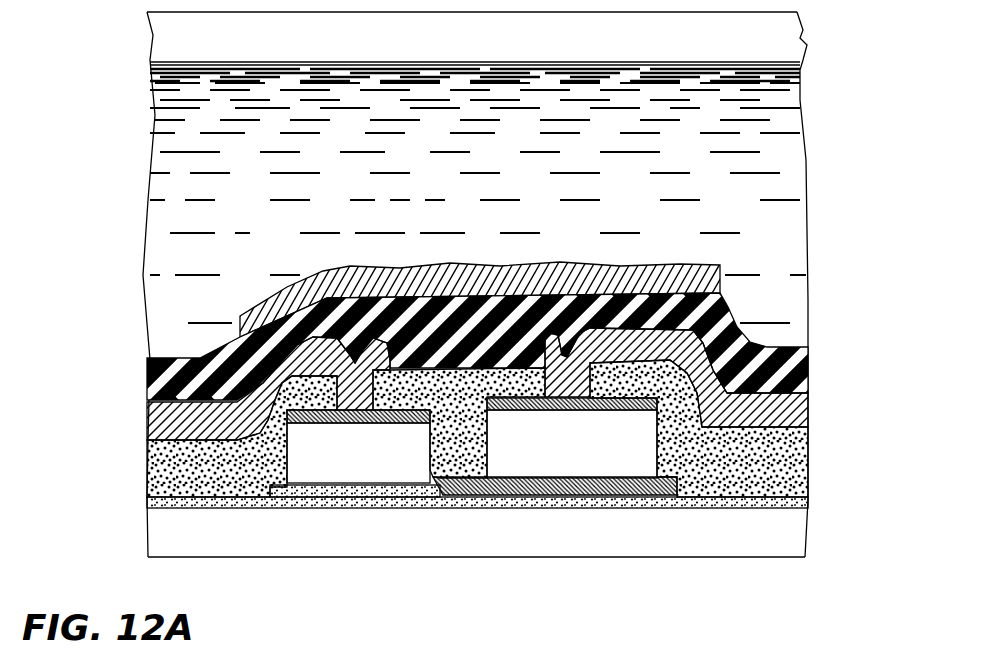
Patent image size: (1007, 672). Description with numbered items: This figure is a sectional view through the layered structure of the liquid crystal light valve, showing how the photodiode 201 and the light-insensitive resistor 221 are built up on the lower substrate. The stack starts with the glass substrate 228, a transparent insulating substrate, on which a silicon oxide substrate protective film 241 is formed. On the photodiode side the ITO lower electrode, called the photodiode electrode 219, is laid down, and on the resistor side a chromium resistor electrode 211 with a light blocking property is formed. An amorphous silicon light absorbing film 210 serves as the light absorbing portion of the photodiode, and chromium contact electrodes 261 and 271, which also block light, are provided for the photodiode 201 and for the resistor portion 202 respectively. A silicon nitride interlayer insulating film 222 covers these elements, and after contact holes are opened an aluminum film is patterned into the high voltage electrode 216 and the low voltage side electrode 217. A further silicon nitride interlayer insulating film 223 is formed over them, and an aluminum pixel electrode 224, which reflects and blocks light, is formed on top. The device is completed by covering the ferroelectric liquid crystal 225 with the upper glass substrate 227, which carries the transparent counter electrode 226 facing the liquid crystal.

The glass substrate 227 is at (778, 23).
The counter electrode 226 is at (790, 62).
The liquid crystal 225 is at (777, 188).
The pixel electrode 224 is at (720, 285).
The interlayer insulating film 223 is at (808, 367).
The low voltage side electrode 217 is at (808, 412).
The interlayer insulating film 222 is at (773, 458).
The high voltage electrode 216 is at (148, 432).
The contact electrode 261 is at (287, 465).
The light absorbing film 210 is at (330, 463).
The lower electrode (photodiode electrode) 219 is at (373, 490).
The lower electrode (resistor electrode) 211 is at (470, 490).
The contact electrode 271 is at (513, 410).
The glass substrate 228 is at (582, 525).
The resistor 221 is at (628, 463).
The substrate protective film 241 is at (808, 498).
The photodiode 201 is at (432, 615).
The resistor 202 is at (655, 615).